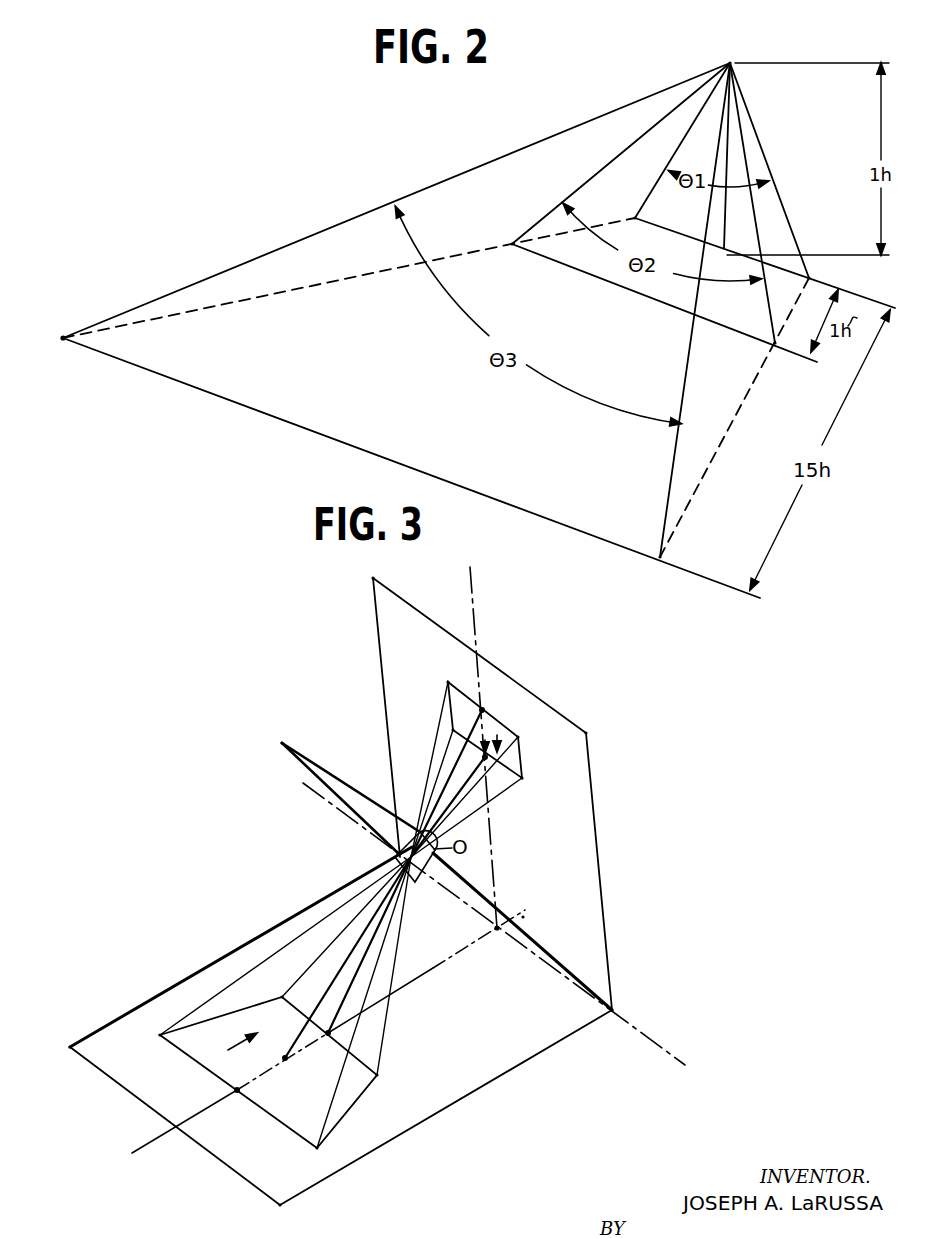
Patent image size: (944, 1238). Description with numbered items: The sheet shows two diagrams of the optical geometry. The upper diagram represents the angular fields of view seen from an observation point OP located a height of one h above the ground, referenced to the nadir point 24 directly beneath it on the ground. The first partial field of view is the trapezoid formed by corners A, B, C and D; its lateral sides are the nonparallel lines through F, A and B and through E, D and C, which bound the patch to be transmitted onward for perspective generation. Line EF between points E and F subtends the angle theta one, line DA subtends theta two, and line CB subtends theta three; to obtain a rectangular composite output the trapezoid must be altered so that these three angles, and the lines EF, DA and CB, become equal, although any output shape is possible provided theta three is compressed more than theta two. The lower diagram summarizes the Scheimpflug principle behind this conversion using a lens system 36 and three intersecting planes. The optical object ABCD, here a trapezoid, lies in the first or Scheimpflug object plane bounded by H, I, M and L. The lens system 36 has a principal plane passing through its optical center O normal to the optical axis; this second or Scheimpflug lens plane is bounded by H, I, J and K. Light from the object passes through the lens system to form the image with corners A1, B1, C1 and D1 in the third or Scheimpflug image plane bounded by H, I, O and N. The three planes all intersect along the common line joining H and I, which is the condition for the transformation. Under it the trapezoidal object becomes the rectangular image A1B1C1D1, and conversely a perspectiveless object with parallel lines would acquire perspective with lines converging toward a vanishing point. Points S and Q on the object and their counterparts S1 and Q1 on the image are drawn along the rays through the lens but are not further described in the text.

In FIG. 2, the nadir point 24 is at (724, 248).
In FIG. 3, the lens system 36 is at (413, 882).
In FIG. 2, the observation point OP is at (730, 63).
In FIG. 2, the trapezoid corner A is at (775, 343).
In FIG. 3, the trapezoid corner A is at (377, 1075).
In FIG. 2, the trapezoid corner B is at (660, 557).
In FIG. 3, the trapezoid corner B is at (317, 1148).
In FIG. 2, the trapezoid corner C is at (63, 338).
In FIG. 3, the trapezoid corner C is at (160, 1035).
In FIG. 2, the trapezoid corner D is at (512, 244).
In FIG. 3, the trapezoid corner D is at (282, 997).
In FIG. 2, the point E is at (635, 218).
In FIG. 2, the point F is at (809, 278).
In FIG. 3, the optical center O is at (373, 578).
In FIG. 3, the image plane corner N is at (587, 733).
In FIG. 3, the common intersection point H is at (612, 1010).
In FIG. 3, the object plane corner M is at (70, 1047).
In FIG. 3, the object plane corner L is at (280, 1205).
In FIG. 3, the lens plane corner K is at (523, 917).
In FIG. 3, the lens plane corner J is at (282, 743).
In FIG. 3, the common intersection point I is at (397, 854).
In FIG. 3, the image corner A1 is at (448, 682).
In FIG. 3, the image corner B1 is at (453, 730).
In FIG. 3, the image corner C1 is at (522, 778).
In FIG. 3, the image corner D1 is at (518, 737).
In FIG. 3, the screen image point S1 is at (488, 740).
In FIG. 3, the screen image point Q1 is at (482, 710).
In FIG. 3, the floor point S is at (285, 1058).
In FIG. 3, the floor point Q is at (328, 1033).